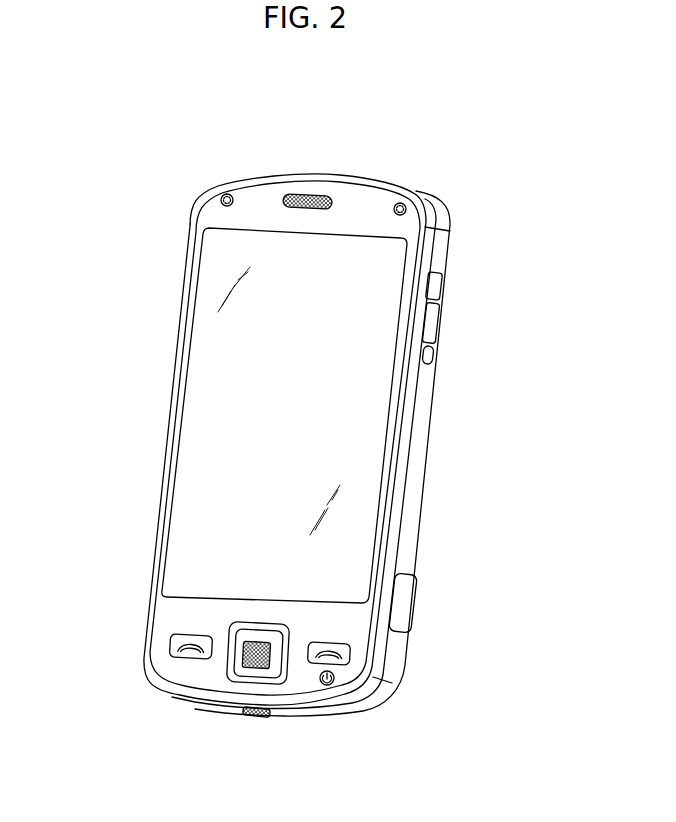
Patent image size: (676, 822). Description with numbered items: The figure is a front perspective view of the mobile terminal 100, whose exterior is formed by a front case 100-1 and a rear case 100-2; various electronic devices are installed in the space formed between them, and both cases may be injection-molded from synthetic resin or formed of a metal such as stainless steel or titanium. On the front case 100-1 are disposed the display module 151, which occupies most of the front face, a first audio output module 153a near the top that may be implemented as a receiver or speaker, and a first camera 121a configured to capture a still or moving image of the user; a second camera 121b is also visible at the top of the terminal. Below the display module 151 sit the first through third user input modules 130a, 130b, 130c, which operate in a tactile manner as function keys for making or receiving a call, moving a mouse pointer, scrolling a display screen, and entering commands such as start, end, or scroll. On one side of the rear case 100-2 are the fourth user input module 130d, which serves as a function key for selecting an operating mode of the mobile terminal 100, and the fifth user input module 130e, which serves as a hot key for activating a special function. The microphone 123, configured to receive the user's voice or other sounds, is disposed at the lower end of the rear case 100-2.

The mobile terminal 100 is at (165, 212).
The front case 100-1 is at (429, 197).
The rear case 100-2 is at (441, 247).
The display module 151 is at (200, 428).
The first camera 121a is at (222, 192).
The second camera 121b is at (399, 201).
The first audio output module 153a is at (303, 193).
The first user input module 130a is at (186, 661).
The second user input module 130b is at (246, 675).
The third user input module 130c is at (342, 665).
The fourth user input module 130d is at (440, 318).
The fifth user input module 130e is at (417, 593).
The microphone 123 is at (261, 718).